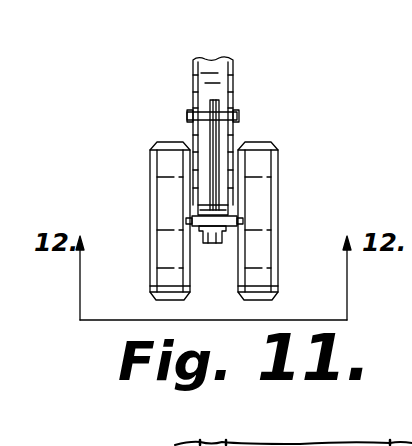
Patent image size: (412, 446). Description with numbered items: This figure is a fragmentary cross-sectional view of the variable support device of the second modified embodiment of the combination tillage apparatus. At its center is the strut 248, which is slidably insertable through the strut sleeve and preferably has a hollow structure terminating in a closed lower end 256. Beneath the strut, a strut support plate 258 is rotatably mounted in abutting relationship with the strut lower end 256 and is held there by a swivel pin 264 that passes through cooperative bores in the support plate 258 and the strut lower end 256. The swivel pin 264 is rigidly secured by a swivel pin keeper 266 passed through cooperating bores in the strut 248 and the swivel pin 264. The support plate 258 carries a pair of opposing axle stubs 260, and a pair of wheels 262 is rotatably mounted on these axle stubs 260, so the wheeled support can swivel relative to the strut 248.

The strut 248 is at (233, 74).
The closed lower end 256 is at (232, 212).
The strut support plate 258 is at (230, 242).
The axle stubs 260 is at (192, 219).
The wheels 262 is at (164, 142).
The swivel pin 264 is at (231, 128).
The swivel pin keeper 266 is at (237, 113).